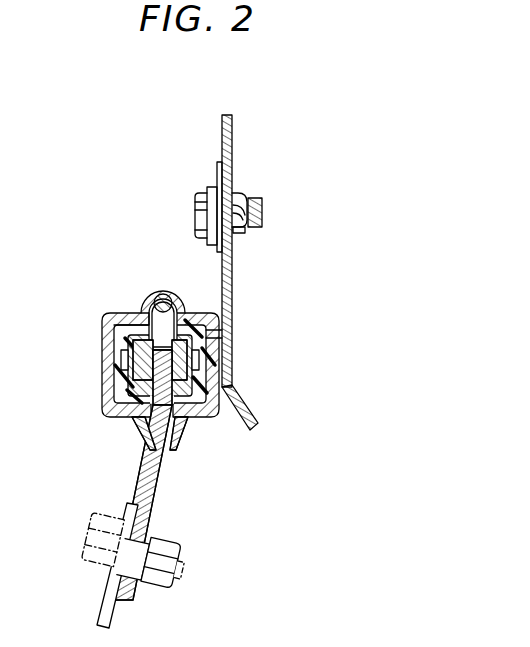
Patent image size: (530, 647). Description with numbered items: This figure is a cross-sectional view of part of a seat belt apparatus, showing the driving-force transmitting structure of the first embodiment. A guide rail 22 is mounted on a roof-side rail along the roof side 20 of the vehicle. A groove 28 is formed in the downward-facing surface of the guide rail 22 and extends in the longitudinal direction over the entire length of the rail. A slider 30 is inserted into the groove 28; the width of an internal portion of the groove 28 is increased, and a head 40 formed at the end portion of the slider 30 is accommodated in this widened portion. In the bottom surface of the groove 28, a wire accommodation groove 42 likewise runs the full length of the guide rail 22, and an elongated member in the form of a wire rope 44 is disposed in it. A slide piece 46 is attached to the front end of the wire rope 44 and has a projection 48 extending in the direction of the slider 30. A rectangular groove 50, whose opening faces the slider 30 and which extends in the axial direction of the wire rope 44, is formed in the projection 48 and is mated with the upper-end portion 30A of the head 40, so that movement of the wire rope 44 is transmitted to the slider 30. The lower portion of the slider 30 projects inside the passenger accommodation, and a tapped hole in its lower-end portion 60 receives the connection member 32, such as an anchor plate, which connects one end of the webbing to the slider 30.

The roof side 20 is at (222, 127).
The guide rail 22 is at (94, 319).
The groove 28 is at (146, 432).
The slider 30 is at (160, 498).
The upper-end portion 30A is at (108, 392).
The connection member 32 is at (98, 608).
The head 40 is at (112, 356).
The wire accommodation groove 42 is at (163, 291).
The wire rope 44 is at (170, 296).
The slide piece 46 is at (150, 316).
The projection 48 is at (214, 331).
The rectangular groove 50 is at (236, 376).
The lower-end portion 60 is at (79, 504).